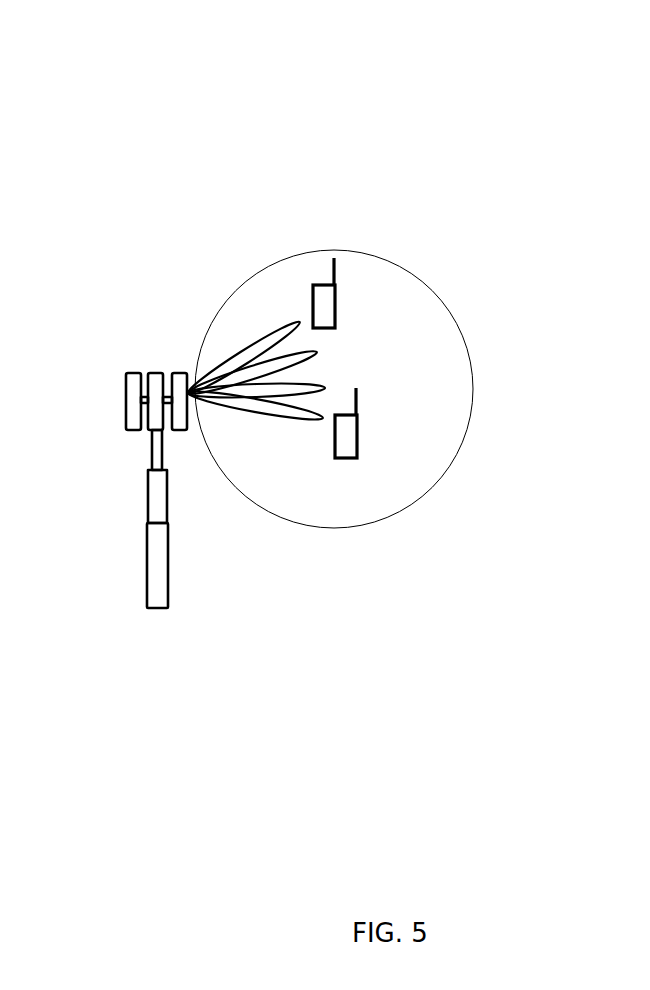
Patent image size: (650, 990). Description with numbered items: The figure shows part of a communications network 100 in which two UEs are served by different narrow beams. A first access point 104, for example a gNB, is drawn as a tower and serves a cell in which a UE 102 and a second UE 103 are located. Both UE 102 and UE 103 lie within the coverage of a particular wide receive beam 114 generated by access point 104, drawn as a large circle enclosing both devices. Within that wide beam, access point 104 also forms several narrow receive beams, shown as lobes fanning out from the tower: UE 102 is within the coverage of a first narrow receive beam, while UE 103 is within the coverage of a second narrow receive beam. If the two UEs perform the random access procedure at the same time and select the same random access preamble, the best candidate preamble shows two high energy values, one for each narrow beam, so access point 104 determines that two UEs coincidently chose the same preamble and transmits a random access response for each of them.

The communications network 100 is at (118, 97).
The UE 102 is at (330, 302).
The second UE 103 is at (357, 440).
The first access point 104 is at (152, 550).
The wide receive (RX) beam 114 is at (462, 337).